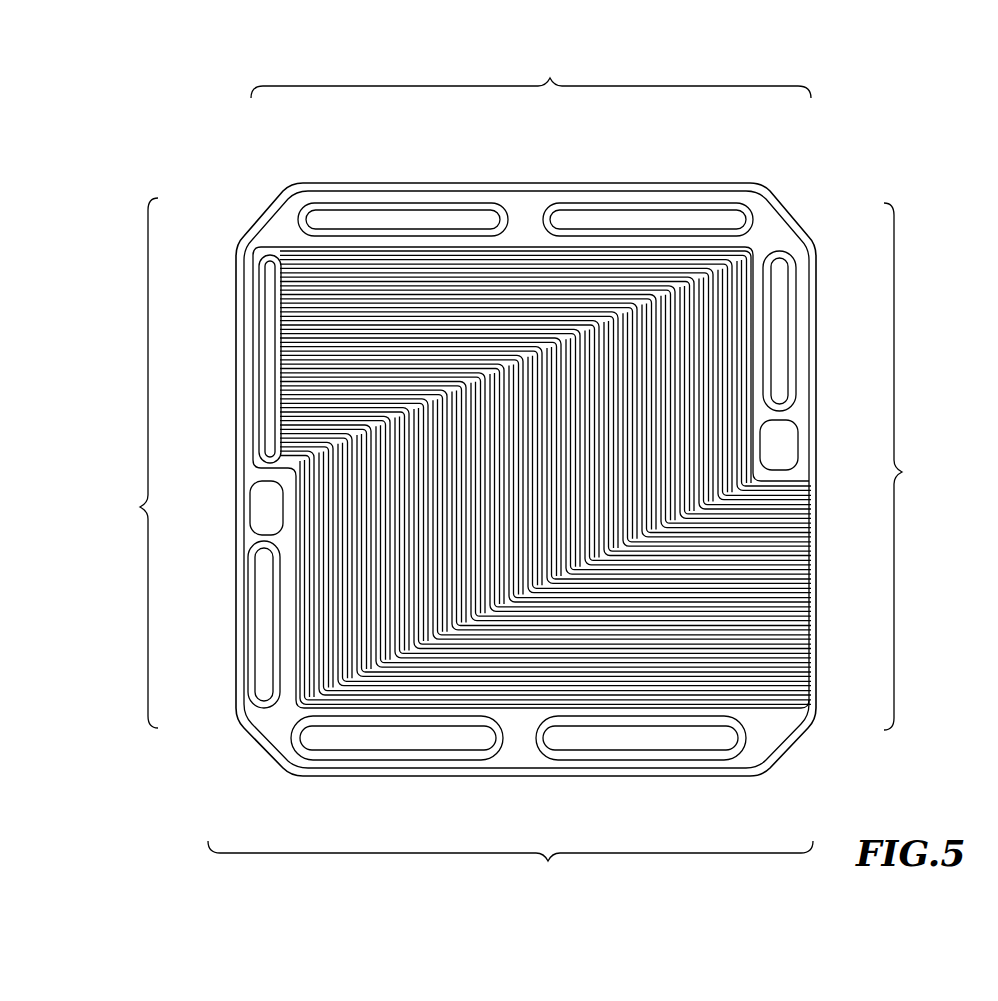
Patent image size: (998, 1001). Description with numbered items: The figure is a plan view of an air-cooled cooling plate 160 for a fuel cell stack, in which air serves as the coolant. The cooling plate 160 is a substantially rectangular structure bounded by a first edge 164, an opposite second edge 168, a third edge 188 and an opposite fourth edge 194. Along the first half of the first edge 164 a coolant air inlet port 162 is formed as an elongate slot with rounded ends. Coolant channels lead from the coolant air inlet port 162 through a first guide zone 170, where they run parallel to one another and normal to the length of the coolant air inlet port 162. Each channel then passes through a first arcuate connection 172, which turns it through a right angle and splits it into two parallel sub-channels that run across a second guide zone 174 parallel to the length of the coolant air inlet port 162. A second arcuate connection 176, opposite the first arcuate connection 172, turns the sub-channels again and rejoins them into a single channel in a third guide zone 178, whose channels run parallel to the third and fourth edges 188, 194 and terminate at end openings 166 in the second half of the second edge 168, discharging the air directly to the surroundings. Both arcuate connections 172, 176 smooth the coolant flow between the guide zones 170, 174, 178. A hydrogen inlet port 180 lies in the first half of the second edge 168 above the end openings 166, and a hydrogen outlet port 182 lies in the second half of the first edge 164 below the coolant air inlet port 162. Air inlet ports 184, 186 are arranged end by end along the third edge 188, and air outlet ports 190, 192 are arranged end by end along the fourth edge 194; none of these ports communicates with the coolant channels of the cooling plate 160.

The cooling plate 160 is at (85, 817).
The coolant air inlet port 162 is at (265, 368).
The first edge 164 is at (102, 463).
The end opening 166 is at (805, 546).
The second edge 168 is at (934, 466).
The first guide zone 170 is at (305, 305).
The first arcuate connection 172 is at (530, 330).
The second guide zone 174 is at (695, 422).
The second arcuate connection 176 is at (600, 590).
The third guide zone 178 is at (750, 622).
The hydrogen inlet port 180 is at (768, 325).
The hydrogen outlet port 182 is at (255, 618).
The air inlet port 184 is at (325, 210).
The air inlet port 186 is at (722, 210).
The third edge 188 is at (531, 58).
The air outlet port 190 is at (320, 730).
The air outlet port 192 is at (720, 730).
The fourth edge 194 is at (510, 871).